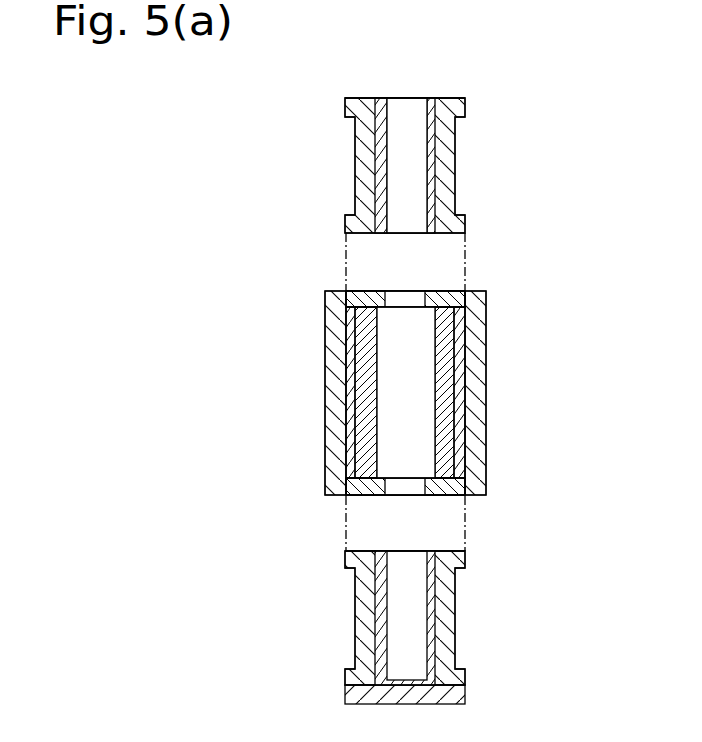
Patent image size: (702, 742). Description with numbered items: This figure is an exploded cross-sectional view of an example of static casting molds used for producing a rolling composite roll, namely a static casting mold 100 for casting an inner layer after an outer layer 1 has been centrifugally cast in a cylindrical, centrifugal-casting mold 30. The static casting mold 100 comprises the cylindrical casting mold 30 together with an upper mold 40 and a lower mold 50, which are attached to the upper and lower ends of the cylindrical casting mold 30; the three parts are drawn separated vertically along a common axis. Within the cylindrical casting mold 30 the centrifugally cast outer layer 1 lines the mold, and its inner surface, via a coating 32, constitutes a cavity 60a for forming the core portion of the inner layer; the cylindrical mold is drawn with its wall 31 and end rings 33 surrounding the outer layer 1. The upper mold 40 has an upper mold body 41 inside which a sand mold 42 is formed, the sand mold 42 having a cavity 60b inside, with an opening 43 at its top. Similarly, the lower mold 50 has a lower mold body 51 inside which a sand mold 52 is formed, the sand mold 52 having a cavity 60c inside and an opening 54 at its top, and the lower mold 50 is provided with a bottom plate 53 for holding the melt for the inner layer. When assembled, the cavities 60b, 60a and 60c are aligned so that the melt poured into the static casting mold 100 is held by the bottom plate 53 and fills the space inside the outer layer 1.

The outer layer 1 is at (447, 437).
The cylindrical casting mold 30 is at (427, 393).
The outer cylinder 31 is at (478, 403).
The coating 32 is at (459, 333).
The spacer ring 33 is at (447, 291).
The upper mold 40 is at (434, 148).
The upper mold body 41 is at (451, 143).
The sand mold 42 is at (431, 189).
The upper cap opening 43 is at (407, 98).
The lower mold 50 is at (434, 616).
The lower mold body 51 is at (445, 598).
The sand mold 52 is at (432, 642).
The bottom plate 53 is at (458, 693).
The lower cap opening 54 is at (400, 552).
The cavity 60a is at (398, 383).
The cavity 60b is at (402, 170).
The cavity 60c is at (401, 613).
The static casting mold 100 is at (470, 393).